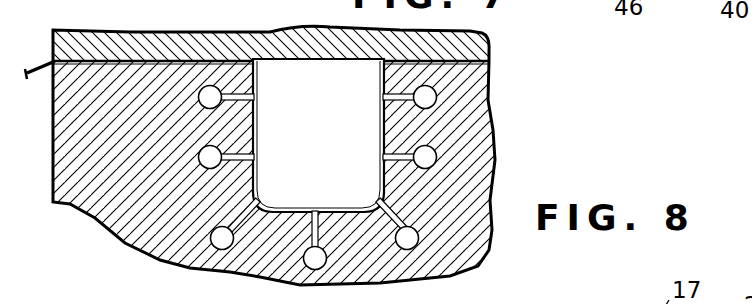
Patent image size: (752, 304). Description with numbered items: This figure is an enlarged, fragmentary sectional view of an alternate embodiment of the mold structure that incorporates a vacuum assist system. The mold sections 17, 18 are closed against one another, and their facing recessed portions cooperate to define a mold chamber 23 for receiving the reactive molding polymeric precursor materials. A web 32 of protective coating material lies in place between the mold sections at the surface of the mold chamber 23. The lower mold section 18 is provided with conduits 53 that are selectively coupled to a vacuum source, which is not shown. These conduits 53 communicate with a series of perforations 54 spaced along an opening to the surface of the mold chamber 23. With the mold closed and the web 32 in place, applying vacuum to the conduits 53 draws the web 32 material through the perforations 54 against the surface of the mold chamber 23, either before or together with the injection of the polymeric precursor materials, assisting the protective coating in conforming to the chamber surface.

The mold section 17 is at (487, 50).
The lower mold section 18 is at (493, 128).
The mold chamber 23 is at (290, 84).
The web 32 is at (33, 75).
The conduits 53 is at (437, 158).
The perforations 54 is at (313, 216).